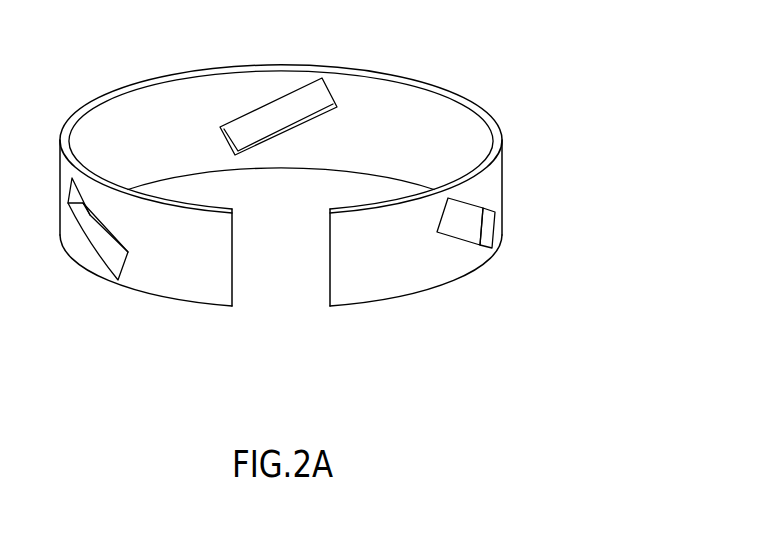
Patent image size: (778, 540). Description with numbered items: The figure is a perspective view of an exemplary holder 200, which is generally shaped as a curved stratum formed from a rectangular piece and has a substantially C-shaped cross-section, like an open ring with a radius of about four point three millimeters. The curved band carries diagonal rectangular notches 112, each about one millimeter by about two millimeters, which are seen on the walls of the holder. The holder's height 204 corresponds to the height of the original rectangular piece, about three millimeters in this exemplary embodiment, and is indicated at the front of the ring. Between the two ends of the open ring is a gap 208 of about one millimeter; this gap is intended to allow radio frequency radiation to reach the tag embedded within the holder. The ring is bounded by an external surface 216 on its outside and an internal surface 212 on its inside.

The holder 200 is at (478, 62).
The diagonal rectangular notches 112 is at (305, 107).
The internal surface 212 is at (165, 115).
The external surface 216 is at (193, 290).
The holder's height 204 is at (320, 213).
The gap 208 is at (330, 322).